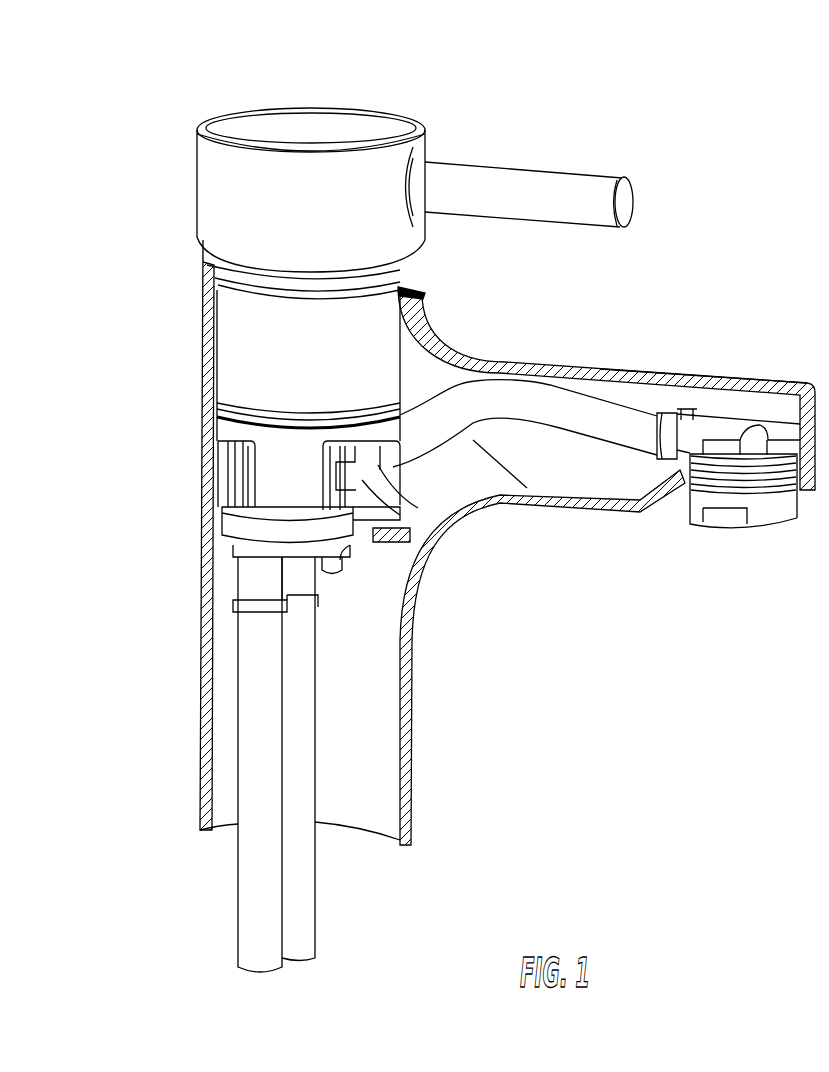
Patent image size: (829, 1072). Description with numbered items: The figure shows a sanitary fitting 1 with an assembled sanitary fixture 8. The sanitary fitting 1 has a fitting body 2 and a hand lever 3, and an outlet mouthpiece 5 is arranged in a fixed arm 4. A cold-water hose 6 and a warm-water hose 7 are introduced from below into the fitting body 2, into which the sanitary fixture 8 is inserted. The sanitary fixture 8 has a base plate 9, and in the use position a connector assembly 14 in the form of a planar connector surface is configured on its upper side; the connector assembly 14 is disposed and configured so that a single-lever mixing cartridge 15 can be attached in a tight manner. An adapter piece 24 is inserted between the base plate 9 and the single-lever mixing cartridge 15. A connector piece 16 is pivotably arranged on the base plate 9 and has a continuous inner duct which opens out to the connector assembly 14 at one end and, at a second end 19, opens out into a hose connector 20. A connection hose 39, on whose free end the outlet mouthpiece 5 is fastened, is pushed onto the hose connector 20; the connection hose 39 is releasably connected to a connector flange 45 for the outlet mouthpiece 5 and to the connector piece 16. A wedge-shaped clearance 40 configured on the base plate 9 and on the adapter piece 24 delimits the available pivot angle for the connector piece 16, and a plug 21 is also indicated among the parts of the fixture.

The sanitary fitting 1 is at (702, 90).
The fitting body 2 is at (240, 520).
The hand lever 3 is at (288, 170).
The arm 4 is at (620, 372).
The outlet mouthpiece 5 is at (777, 503).
The cold-water hose 6 is at (245, 775).
The warm-water hose 7 is at (297, 852).
The sanitary fixture 8 is at (203, 446).
The base plate 9 is at (227, 523).
The connector assembly 14 is at (257, 413).
The single-lever mixing cartridge 15 is at (230, 342).
The connector piece 16 is at (357, 513).
The second end 19 is at (340, 455).
The hose connector 20 is at (404, 535).
The plug 21 is at (340, 560).
The adapter piece 24 is at (240, 475).
The connection hose 39 is at (527, 407).
The clearance 40 is at (361, 476).
The connector flange 45 is at (727, 440).